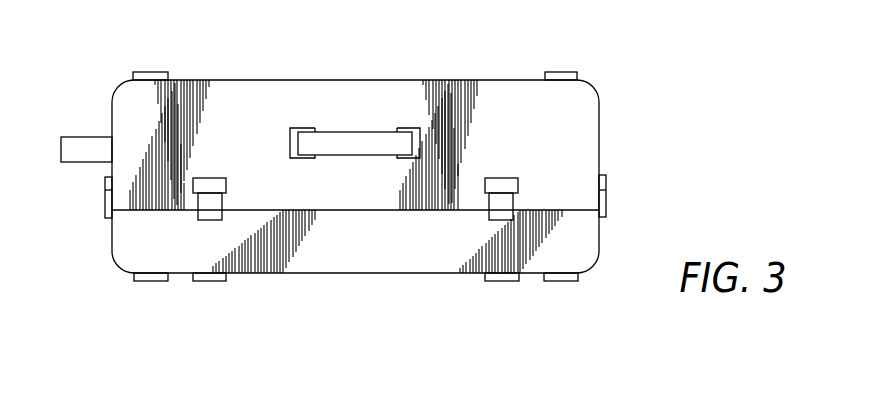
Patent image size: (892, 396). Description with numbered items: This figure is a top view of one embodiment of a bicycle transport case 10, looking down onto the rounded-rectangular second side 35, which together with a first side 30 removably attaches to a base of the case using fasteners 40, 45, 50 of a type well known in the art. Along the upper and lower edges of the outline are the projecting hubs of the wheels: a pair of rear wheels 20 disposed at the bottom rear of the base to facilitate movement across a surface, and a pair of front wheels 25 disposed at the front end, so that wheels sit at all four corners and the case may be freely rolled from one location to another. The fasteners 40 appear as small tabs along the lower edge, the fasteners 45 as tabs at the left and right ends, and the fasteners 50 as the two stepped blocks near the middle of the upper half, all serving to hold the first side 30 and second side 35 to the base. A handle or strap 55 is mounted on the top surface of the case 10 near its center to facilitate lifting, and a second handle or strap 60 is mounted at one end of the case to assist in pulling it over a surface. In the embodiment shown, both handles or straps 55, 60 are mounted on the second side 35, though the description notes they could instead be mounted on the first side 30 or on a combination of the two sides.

The bicycle transport case 10 is at (361, 62).
The rear wheels 20 is at (562, 72).
The front wheels 25 is at (150, 72).
The first side 30 is at (330, 273).
The second side 35 is at (410, 80).
The fastener 40 is at (213, 281).
The fastener 45 is at (105, 200).
The fastener 50 is at (211, 184).
The handle or strap 55 is at (320, 142).
The handle or strap 60 is at (77, 145).